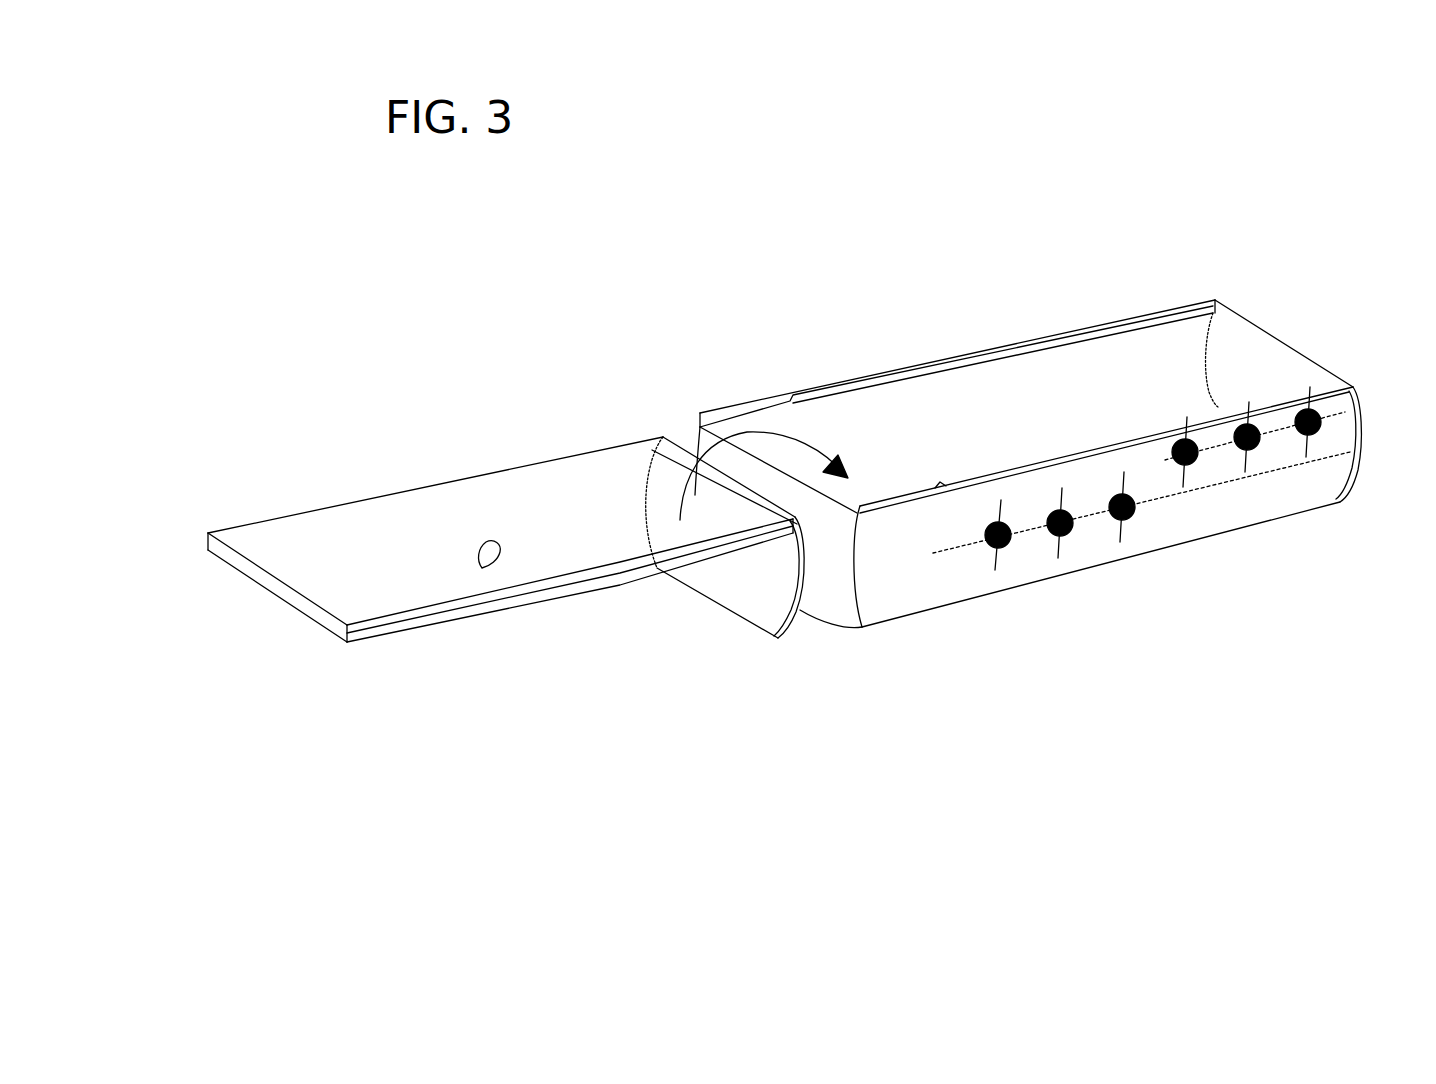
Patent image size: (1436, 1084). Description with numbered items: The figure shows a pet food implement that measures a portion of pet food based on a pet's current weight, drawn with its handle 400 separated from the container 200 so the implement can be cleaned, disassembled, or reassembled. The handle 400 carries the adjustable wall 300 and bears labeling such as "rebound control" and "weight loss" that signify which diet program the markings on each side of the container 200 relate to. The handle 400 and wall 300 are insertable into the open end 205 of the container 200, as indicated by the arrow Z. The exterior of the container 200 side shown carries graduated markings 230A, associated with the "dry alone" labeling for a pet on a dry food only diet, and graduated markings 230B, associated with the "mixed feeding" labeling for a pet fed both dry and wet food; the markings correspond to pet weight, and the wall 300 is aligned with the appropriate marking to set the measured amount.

The container 200 is at (1028, 488).
The curved end wall of container 205 is at (832, 572).
The graduated markings 230A is at (1057, 553).
The graduated markings 230B is at (1068, 488).
The adjustable wall 300 is at (506, 603).
The handle 400 is at (383, 592).
The arrow Z is at (685, 492).